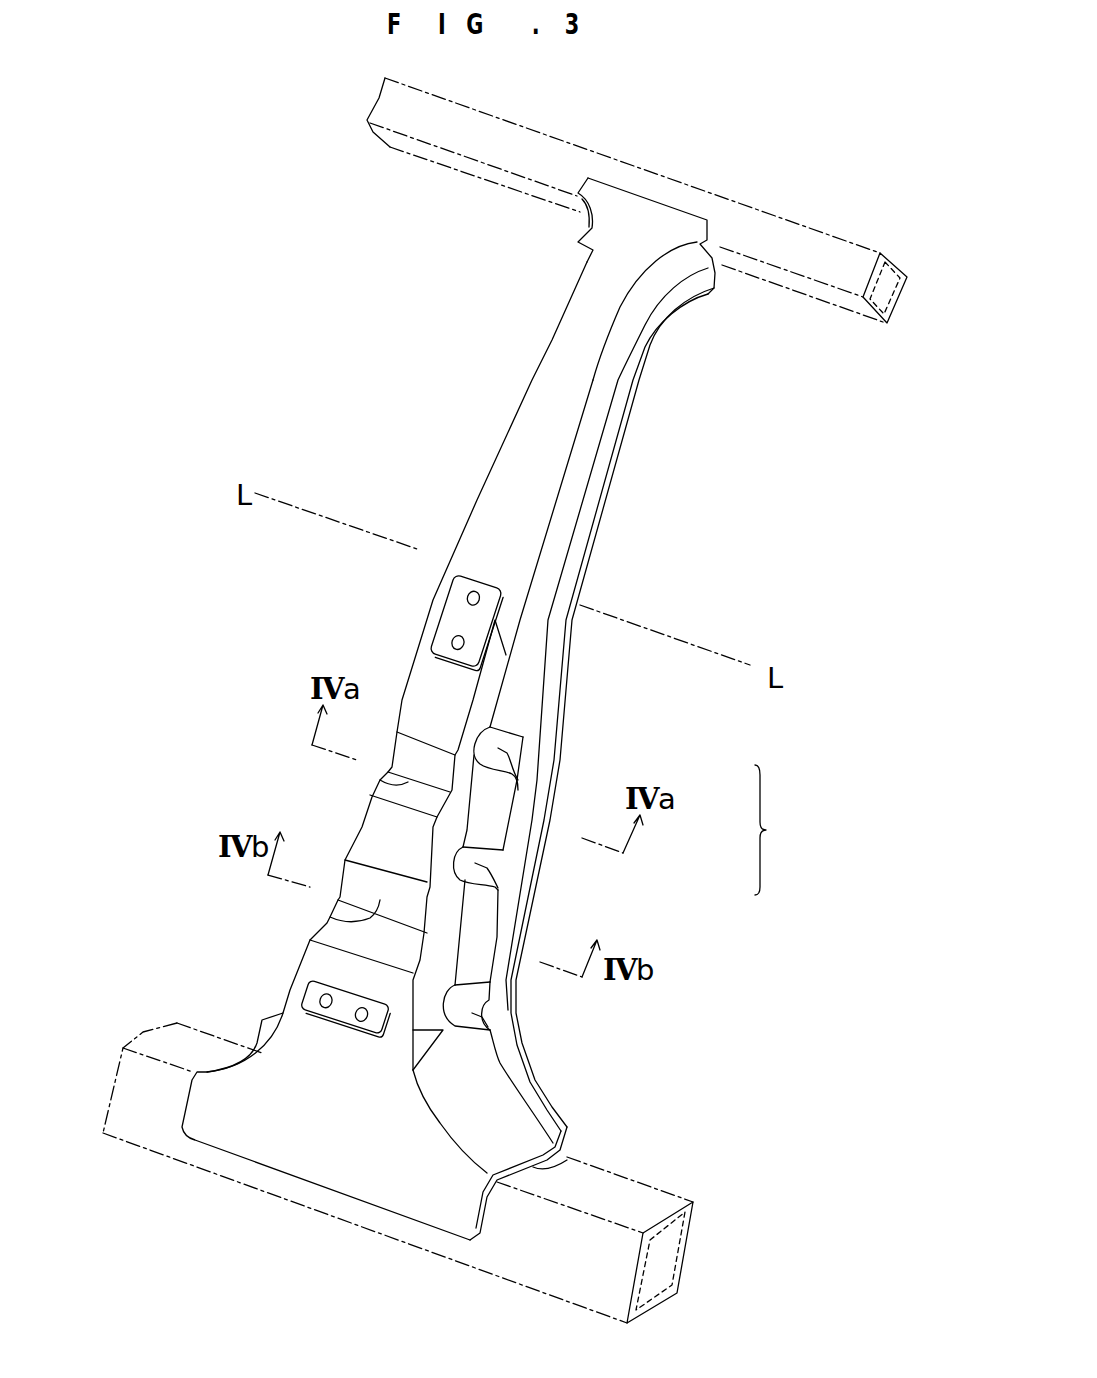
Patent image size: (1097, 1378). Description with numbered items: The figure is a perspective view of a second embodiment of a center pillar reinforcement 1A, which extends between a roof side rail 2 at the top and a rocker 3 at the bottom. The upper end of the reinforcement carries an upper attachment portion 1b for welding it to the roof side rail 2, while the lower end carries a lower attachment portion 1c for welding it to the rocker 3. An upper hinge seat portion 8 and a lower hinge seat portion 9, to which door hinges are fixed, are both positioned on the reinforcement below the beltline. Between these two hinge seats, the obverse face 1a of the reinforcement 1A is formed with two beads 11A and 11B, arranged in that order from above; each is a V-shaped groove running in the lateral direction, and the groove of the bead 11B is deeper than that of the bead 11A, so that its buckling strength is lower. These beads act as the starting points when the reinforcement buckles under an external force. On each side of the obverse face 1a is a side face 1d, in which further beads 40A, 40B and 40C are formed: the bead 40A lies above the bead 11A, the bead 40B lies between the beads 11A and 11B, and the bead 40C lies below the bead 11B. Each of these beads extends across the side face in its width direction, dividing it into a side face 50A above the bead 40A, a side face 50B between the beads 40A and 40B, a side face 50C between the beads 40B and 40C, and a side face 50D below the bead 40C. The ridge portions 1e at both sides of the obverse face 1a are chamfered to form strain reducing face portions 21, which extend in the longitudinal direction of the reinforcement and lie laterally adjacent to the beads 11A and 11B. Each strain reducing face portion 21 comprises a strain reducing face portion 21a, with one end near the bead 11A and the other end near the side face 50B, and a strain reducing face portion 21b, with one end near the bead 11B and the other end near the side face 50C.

The obverse face 1a is at (560, 345).
The upper attachment portion 1b is at (722, 256).
The lower attachment portion 1c is at (536, 1168).
The side face 1d is at (583, 217).
The ridge portion 1e is at (497, 460).
The reinforcement 1A is at (625, 457).
The roof side rail 2 is at (828, 236).
The rocker 3 is at (690, 1250).
The upper hinge seat portion 8 is at (452, 605).
The lower hinge seat portion 9 is at (317, 983).
The bead 11A is at (390, 772).
The bead 11B is at (330, 917).
The strain reducing face portion 21 is at (780, 830).
The strain reducing face portion 21a is at (520, 803).
The strain reducing face portion 21b is at (447, 937).
The bead 40A is at (497, 752).
The bead 40B is at (473, 865).
The bead 40C is at (472, 1013).
The side face 50A is at (528, 650).
The side face 50B is at (497, 822).
The side face 50C is at (487, 973).
The side face 50D is at (500, 1112).